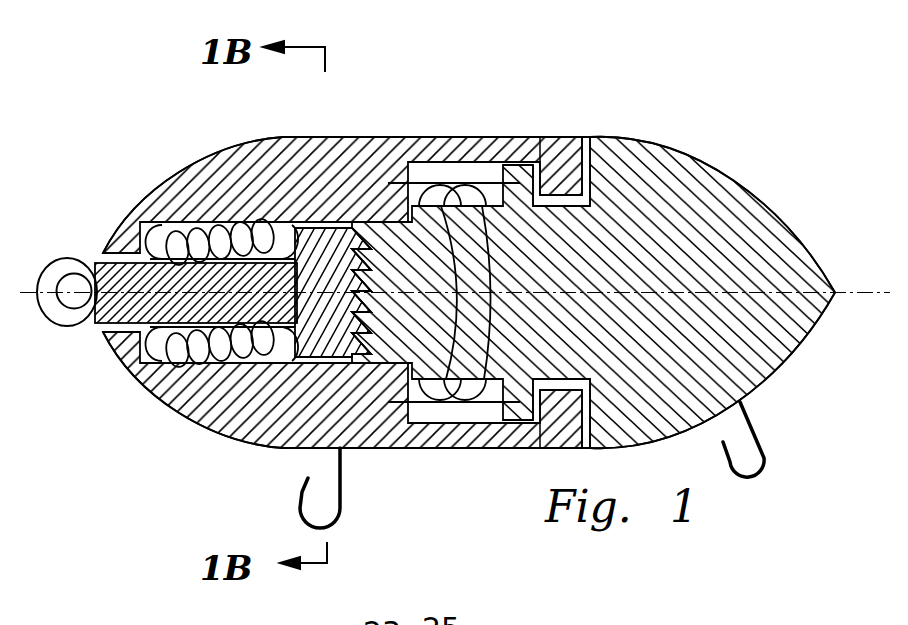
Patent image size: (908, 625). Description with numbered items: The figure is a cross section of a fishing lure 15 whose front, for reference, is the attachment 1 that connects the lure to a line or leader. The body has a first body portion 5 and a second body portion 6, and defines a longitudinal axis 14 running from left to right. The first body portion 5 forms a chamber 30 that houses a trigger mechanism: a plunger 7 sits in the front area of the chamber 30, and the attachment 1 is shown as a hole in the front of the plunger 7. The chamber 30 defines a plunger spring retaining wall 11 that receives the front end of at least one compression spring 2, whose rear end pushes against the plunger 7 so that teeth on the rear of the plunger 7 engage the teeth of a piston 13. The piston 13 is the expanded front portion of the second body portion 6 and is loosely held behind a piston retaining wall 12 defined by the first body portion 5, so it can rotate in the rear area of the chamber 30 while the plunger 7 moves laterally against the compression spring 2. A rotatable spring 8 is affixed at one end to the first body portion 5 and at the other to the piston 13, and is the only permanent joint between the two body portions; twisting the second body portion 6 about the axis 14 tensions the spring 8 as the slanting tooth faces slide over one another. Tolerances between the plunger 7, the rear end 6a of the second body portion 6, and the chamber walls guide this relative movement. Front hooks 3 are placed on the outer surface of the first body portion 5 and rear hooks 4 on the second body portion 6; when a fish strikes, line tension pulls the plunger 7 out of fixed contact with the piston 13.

The attachment 1 is at (68, 258).
The compression spring 2 is at (190, 328).
The front hooks 3 is at (345, 487).
The rear hooks 4 is at (766, 449).
The first body portion 5 is at (392, 136).
The second body portion 6 is at (784, 216).
The rear end of the second portion 6a is at (364, 250).
The plunger 7 is at (296, 226).
The rotatable spring 8 is at (483, 182).
The plunger spring retaining wall 11 is at (157, 222).
The piston retaining wall 12 is at (546, 172).
The piston 13 is at (594, 208).
The longitudinal axis 14 is at (858, 291).
The lure 15 is at (705, 130).
The chamber 30 is at (343, 226).